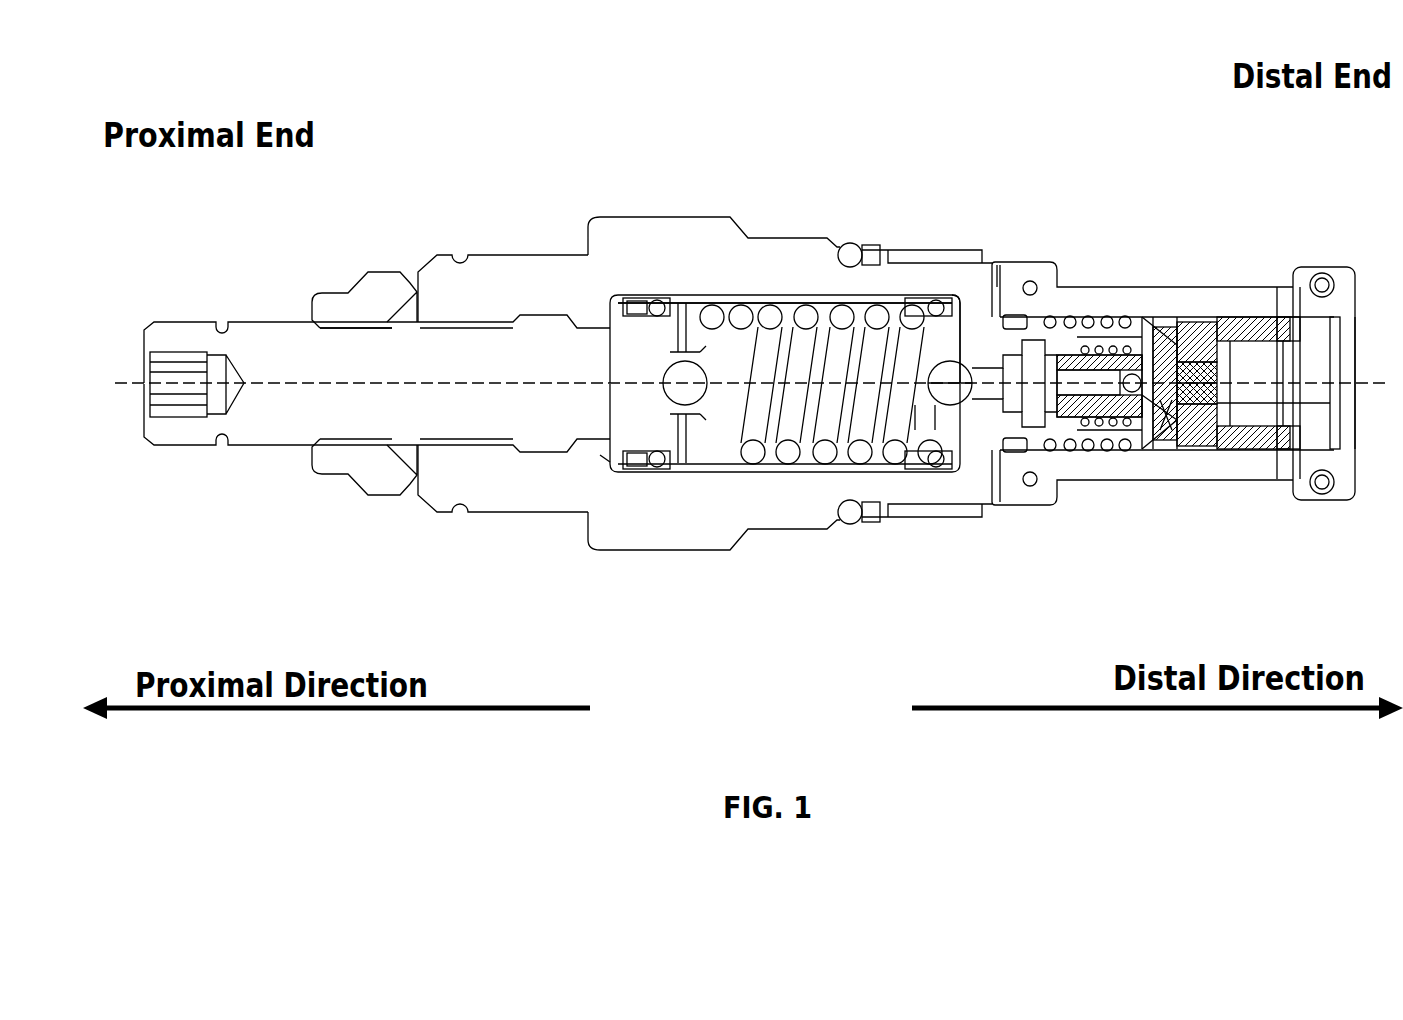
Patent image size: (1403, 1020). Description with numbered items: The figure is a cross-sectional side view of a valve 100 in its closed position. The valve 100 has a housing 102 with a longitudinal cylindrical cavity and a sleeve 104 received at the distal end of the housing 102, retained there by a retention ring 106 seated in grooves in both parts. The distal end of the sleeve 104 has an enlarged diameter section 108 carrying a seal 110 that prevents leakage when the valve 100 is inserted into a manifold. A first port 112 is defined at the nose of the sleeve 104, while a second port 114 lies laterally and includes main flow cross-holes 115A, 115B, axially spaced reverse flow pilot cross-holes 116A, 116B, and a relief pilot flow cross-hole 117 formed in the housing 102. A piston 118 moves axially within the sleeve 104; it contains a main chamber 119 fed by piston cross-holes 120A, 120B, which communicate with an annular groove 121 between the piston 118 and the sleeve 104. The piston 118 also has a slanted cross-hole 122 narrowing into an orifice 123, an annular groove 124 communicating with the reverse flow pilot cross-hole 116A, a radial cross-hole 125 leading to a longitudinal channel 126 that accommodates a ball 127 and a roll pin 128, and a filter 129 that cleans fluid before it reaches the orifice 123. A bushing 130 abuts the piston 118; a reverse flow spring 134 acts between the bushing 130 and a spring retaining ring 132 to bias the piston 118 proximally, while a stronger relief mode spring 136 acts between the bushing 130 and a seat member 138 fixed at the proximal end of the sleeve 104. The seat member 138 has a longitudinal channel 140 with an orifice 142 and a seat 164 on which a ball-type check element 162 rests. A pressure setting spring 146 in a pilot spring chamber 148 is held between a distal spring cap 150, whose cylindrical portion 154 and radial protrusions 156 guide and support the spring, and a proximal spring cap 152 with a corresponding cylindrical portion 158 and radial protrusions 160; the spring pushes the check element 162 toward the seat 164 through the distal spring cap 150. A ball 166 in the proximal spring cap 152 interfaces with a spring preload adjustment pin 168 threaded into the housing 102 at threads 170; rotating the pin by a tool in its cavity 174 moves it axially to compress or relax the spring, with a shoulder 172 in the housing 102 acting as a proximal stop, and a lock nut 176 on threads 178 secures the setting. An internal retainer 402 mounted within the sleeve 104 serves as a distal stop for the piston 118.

The valve 100 is at (586, 130).
The housing 102 is at (695, 217).
The sleeve 104 is at (1149, 359).
The retention ring 106 is at (1030, 284).
The enlarged diameter section 108 is at (1347, 380).
The seal 110 is at (1322, 282).
The first port 112 is at (1358, 420).
The second port 114 is at (1203, 366).
The main flow cross-hole 115A is at (1283, 309).
The main flow cross-hole 115B is at (1263, 448).
The reverse flow pilot cross-hole 116A is at (1193, 296).
The reverse flow pilot cross-hole 116B is at (1192, 482).
The relief pilot flow cross-hole 117 is at (998, 274).
The piston 118 is at (1230, 320).
The main chamber 119 is at (1270, 407).
The piston cross-hole 120A is at (1245, 332).
The piston cross-hole 120B is at (1232, 437).
The annular groove 121 is at (1218, 346).
The slanted cross-hole 122 is at (1167, 427).
The orifice 123 is at (1194, 392).
The annular groove 124 is at (1177, 316).
The cross-hole 125 is at (1171, 346).
The longitudinal channel 126 is at (1155, 382).
The ball 127 is at (1017, 394).
The roll pin 128 is at (1092, 418).
The filter 129 is at (1205, 403).
The bushing 130 is at (1105, 338).
The spring retaining ring 132 is at (1065, 414).
The reverse flow spring 134 is at (1138, 432).
The relief mode spring 136 is at (1073, 318).
The seat member 138 is at (948, 392).
The longitudinal channel 140 is at (972, 454).
The orifice 142 is at (993, 394).
The pressure setting spring 146 is at (821, 410).
The pilot spring chamber 148 is at (821, 472).
The distal spring cap 150 is at (906, 436).
The proximal spring cap 152 is at (725, 432).
The cylindrical portion 154 is at (910, 327).
The radial protrusions 156 is at (938, 312).
The cylindrical portion 158 is at (718, 420).
The radial protrusions 160 is at (700, 440).
The check element 162 is at (935, 412).
The seat 164 is at (970, 356).
The ball 166 is at (690, 394).
The spring preload adjustment pin 168 is at (276, 448).
The threads 170 is at (459, 326).
The shoulder 172 is at (604, 461).
The cavity 174 is at (186, 375).
The lock nut 176 is at (373, 271).
The threads 178 is at (341, 328).
The internal retainer 402 is at (1340, 337).